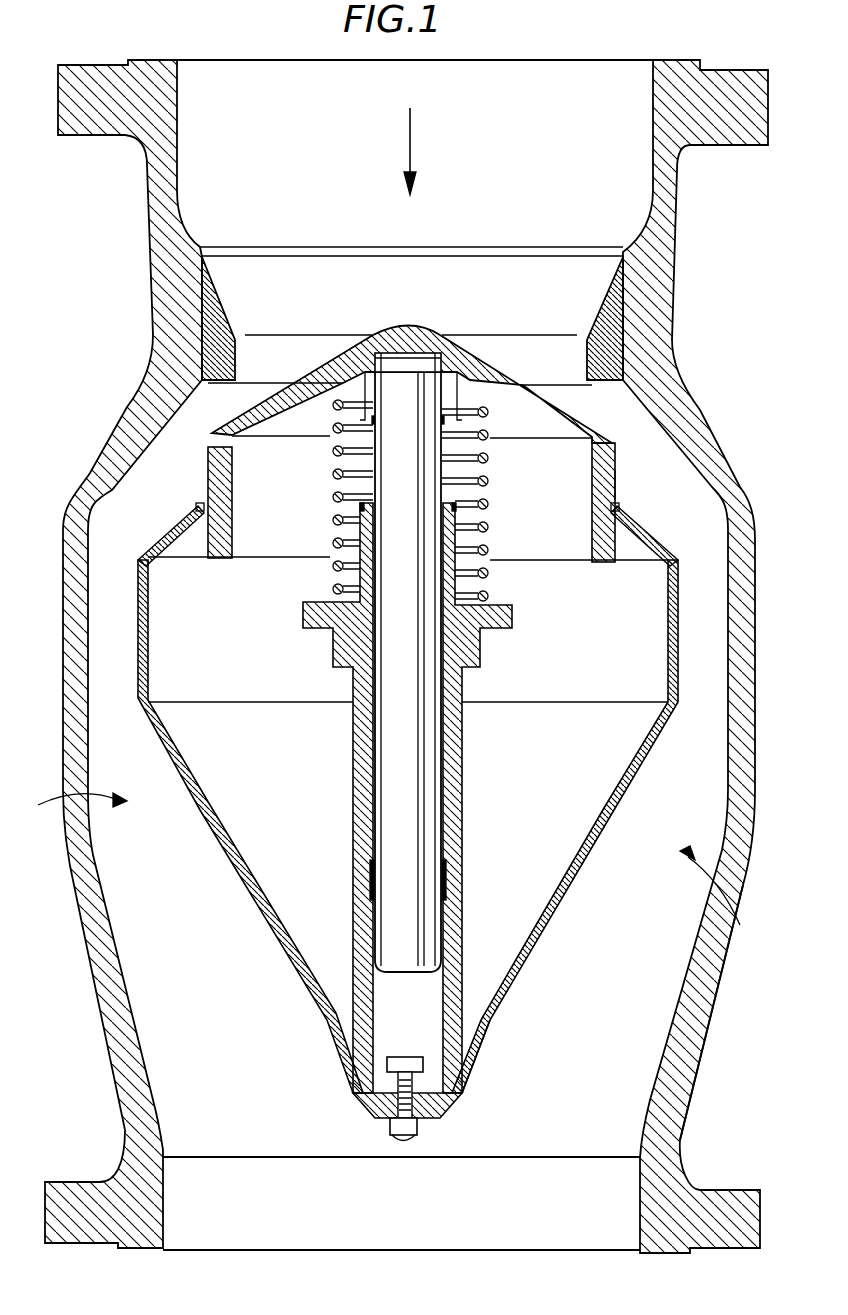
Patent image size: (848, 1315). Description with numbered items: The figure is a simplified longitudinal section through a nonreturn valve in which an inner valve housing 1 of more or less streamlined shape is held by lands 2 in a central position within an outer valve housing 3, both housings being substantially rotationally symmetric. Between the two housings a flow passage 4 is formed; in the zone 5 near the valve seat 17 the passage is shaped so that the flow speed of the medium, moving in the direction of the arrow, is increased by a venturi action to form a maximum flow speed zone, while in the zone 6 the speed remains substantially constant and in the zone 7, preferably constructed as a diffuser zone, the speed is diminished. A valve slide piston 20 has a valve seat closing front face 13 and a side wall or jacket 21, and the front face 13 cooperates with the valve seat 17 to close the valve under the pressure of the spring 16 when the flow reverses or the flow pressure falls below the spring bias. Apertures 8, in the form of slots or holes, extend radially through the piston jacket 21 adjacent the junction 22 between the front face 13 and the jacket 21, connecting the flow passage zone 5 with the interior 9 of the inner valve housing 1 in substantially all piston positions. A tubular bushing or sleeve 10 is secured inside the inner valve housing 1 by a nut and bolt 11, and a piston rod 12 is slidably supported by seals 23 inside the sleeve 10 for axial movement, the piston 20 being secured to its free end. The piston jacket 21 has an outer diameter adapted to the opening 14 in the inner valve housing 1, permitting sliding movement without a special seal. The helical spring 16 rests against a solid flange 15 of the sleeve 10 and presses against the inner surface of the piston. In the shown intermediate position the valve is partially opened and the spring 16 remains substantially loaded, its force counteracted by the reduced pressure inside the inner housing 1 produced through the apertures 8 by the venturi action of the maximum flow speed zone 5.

The inner valve housing 1 is at (555, 905).
The lands 2 is at (190, 790).
The outer valve housing 3 is at (737, 822).
The flow passage 4 is at (388, 525).
The maximum flow speed zone 5 is at (187, 427).
The zone of constant speed 6 is at (100, 665).
The diffuser zone 7 is at (203, 1035).
The apertures 8 is at (215, 445).
The interior of the inner valve housing 9 is at (227, 758).
The sleeve 10 is at (380, 790).
The nut and bolt 11 is at (370, 1105).
The piston rod 12 is at (395, 745).
The front face 13 is at (265, 410).
The opening 14 is at (197, 507).
The flange 15 is at (508, 620).
The helical spring 16 is at (480, 545).
The valve seat 17 is at (213, 313).
The valve slide piston 20 is at (316, 511).
The piston jacket 21 is at (629, 491).
The junction 22 is at (568, 430).
The seals 23 is at (352, 585).